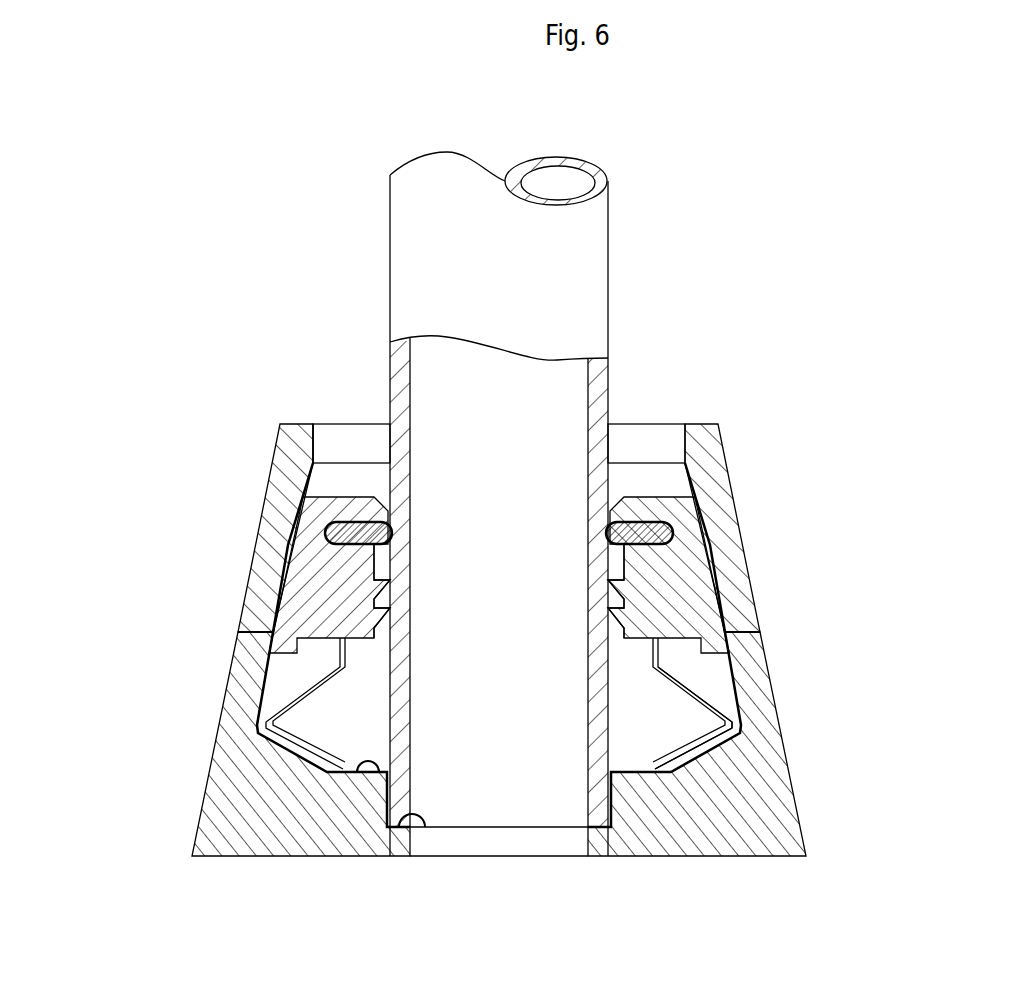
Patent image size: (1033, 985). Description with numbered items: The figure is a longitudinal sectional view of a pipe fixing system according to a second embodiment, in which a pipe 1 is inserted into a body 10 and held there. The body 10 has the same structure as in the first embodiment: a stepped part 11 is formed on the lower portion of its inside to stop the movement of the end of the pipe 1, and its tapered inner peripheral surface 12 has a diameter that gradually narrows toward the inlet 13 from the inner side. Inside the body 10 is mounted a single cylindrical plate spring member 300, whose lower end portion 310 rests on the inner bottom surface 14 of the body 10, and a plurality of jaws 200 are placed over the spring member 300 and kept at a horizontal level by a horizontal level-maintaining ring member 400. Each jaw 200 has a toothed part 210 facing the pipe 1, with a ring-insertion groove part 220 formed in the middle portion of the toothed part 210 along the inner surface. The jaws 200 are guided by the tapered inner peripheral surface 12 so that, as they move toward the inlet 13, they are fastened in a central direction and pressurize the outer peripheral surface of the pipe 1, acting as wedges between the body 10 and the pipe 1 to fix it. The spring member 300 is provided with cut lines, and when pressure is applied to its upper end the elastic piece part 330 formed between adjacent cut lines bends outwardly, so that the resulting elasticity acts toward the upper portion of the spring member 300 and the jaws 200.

The pipe 1 is at (597, 234).
The body 10 is at (208, 773).
The stepped part 11 is at (423, 828).
The tapered inner peripheral surface 12 is at (238, 632).
The inlet 13 is at (333, 437).
The inner bottom surface 14 is at (380, 788).
The jaws 200 is at (266, 481).
The toothed part 210 is at (364, 607).
The ring-insertion groove part 220 is at (325, 531).
The single cylindrical plate spring member 300 is at (704, 688).
The lower end portion 310 is at (664, 784).
The elastic piece part 330 is at (732, 700).
The horizontal level-maintaining ring member 400 is at (346, 492).